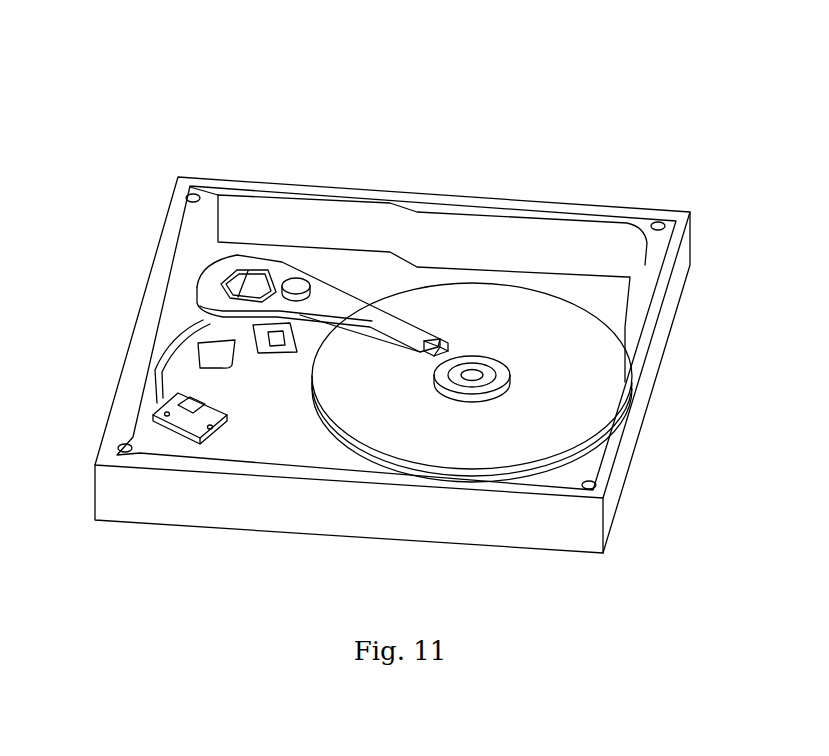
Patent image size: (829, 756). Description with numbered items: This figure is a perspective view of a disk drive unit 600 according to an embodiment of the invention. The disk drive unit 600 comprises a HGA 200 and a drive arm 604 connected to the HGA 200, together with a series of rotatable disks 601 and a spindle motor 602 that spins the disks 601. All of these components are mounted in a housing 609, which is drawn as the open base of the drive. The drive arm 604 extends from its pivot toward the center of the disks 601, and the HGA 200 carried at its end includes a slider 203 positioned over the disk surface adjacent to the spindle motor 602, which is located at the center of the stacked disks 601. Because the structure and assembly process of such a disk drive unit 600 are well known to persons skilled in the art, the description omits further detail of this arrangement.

The disk drive unit 600 is at (85, 52).
The rotatable disks 601 is at (545, 320).
The spindle motor 602 is at (472, 370).
The slider 203 is at (441, 342).
The HGA 200 is at (382, 325).
The drive arm 604 is at (320, 287).
The housing 609 is at (627, 250).